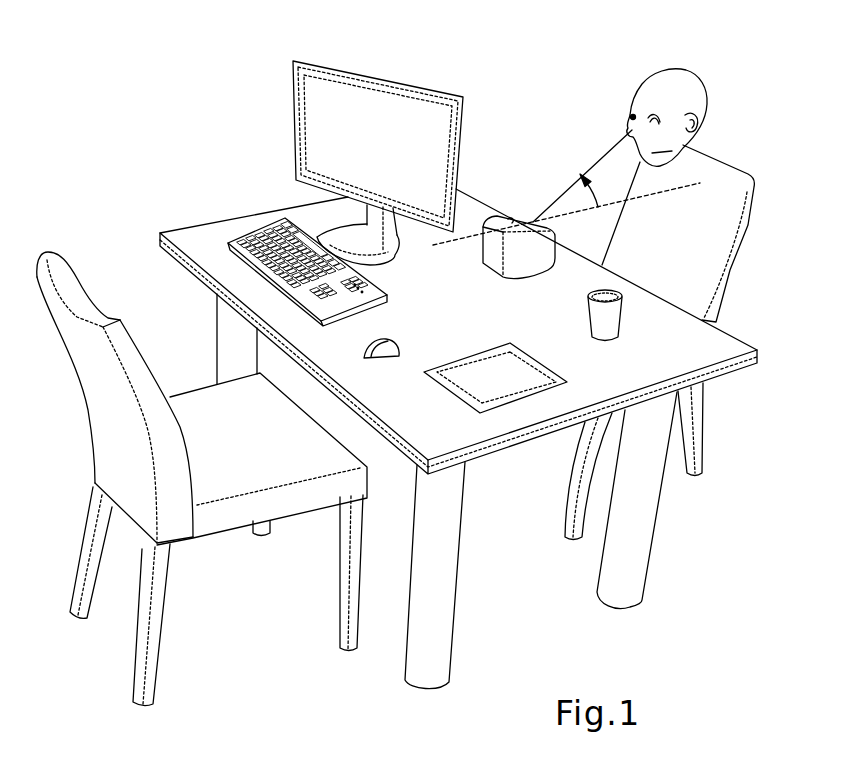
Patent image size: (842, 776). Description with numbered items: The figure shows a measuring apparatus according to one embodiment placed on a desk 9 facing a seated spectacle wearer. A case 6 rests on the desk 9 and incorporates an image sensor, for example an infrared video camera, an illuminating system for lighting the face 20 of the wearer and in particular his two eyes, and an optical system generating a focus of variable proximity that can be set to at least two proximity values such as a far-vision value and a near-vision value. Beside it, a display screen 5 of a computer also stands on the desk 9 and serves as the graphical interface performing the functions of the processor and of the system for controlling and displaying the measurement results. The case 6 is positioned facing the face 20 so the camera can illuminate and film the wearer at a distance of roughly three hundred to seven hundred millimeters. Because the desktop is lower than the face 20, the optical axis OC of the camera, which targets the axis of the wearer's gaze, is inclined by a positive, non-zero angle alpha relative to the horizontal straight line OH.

The display screen 5 is at (310, 110).
The desk 9 is at (188, 228).
The face of the wearer 20 is at (662, 80).
The case 6 is at (518, 262).
The optical axis OC is at (606, 150).
The horizontal straight line OH is at (473, 238).
The angle alpha is at (634, 188).